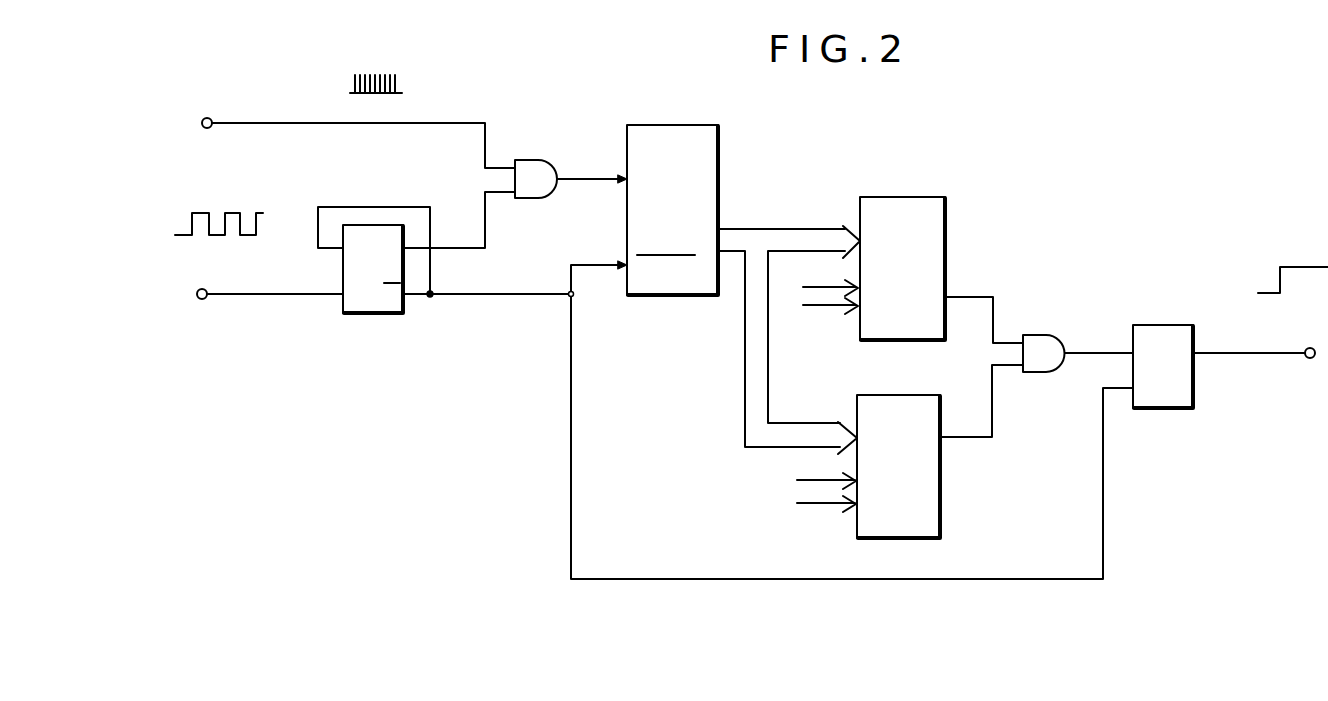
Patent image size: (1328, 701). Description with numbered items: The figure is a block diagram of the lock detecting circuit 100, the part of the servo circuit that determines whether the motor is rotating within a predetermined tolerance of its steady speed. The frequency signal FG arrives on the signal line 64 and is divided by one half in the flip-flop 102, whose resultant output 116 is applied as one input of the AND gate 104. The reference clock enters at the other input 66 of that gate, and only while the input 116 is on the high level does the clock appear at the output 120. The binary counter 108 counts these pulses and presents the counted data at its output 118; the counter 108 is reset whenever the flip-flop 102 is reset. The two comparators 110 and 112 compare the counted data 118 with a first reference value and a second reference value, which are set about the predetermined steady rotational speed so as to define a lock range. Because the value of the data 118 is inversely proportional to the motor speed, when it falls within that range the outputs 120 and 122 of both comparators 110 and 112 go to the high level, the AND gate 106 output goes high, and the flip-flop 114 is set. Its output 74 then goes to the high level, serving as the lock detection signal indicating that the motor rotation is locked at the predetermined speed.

The lock detecting circuit 100 is at (838, 124).
The input for reference clock CLK1 66 is at (204, 129).
The signal line 64 is at (200, 300).
The flip-flop 102 is at (380, 313).
The AND gate 104 is at (538, 159).
The AND gate 106 is at (1035, 373).
The binary counter 108 is at (655, 297).
The comparator 110 is at (950, 208).
The comparator 112 is at (942, 505).
The flip-flop 114 is at (1162, 410).
The input of the AND gate 116 is at (485, 223).
The counted data output 118 is at (727, 253).
The output 120 is at (590, 182).
The comparator output 122 is at (965, 438).
The output 74 is at (1302, 368).